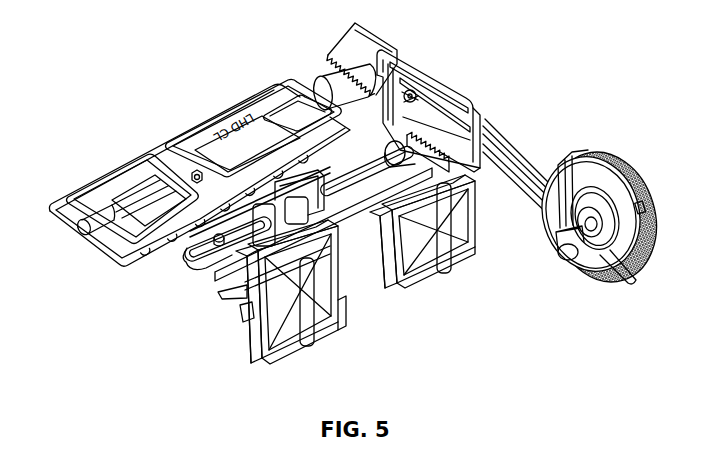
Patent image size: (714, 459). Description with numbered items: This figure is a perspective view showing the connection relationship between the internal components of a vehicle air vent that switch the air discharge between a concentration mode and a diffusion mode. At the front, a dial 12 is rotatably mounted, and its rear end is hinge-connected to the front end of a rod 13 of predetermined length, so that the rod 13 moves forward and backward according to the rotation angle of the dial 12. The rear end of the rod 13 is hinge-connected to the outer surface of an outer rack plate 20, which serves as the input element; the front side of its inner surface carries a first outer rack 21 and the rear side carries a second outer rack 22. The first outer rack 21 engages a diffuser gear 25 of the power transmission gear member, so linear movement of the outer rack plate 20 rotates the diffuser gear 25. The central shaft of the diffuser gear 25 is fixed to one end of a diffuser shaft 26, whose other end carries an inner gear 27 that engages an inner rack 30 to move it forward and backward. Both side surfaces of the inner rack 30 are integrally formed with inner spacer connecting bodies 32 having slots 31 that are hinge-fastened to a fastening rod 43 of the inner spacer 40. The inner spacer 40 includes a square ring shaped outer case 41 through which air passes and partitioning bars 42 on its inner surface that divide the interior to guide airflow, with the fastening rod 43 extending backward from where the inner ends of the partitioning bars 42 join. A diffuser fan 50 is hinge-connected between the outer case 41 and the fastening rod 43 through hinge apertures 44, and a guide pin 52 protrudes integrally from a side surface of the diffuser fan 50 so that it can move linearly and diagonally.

The dial 12 is at (616, 162).
The rod 13 is at (518, 150).
The outer rack plate 20 is at (455, 105).
The first outer rack 21 is at (465, 126).
The second outer rack 22 is at (350, 53).
The diffuser gear 25 is at (409, 141).
The diffuser shaft 26 is at (344, 214).
The inner gear 27 is at (262, 266).
The inner rack 30 is at (333, 312).
The slot 31 is at (196, 266).
The inner spacer connecting body 32 is at (184, 260).
The inner spacer 40 is at (304, 317).
The outer case 41 is at (321, 336).
The partitioning bar 42 is at (291, 344).
The fastening rod 43 is at (227, 263).
The hinge aperture 44 is at (248, 312).
The diffuser fan 50 is at (436, 254).
The guide pin 52 is at (464, 248).